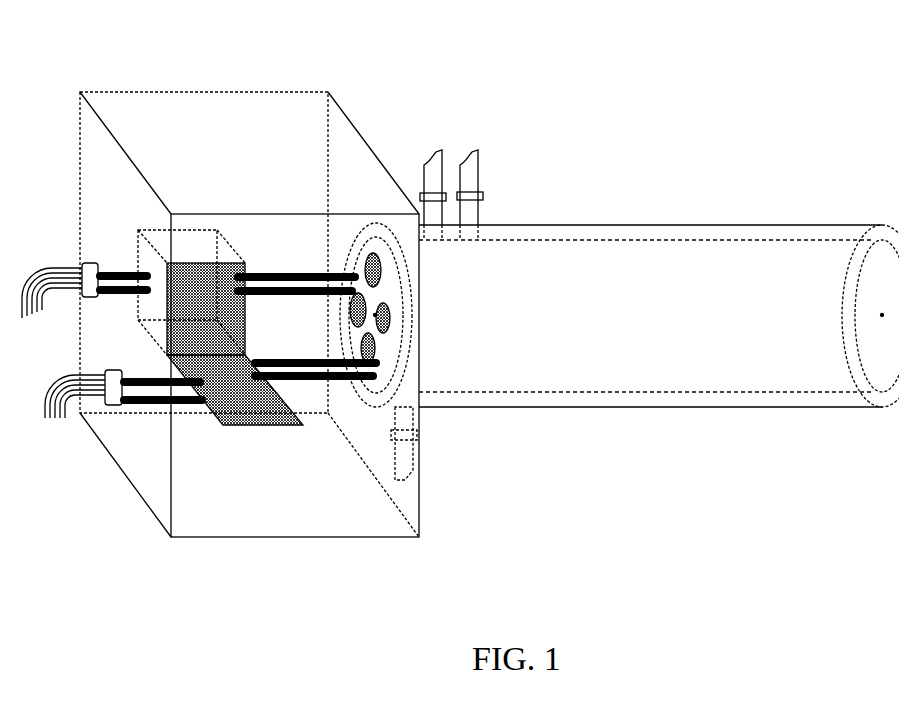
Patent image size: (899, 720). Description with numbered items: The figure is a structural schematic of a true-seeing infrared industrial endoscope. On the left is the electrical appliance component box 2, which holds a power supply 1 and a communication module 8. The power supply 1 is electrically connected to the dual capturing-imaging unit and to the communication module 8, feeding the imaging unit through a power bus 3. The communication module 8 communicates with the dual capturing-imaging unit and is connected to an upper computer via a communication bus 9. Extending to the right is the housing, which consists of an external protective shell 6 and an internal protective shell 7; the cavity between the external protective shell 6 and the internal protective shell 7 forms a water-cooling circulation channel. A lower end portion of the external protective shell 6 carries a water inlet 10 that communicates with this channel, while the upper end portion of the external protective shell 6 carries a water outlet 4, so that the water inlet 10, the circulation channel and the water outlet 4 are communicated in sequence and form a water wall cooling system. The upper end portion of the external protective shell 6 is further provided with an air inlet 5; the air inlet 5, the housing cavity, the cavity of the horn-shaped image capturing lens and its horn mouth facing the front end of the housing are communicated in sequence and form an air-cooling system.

The power supply 1 is at (200, 243).
The electrical appliance component box 2 is at (275, 155).
The power bus 3 is at (320, 390).
The water outlet 4 is at (433, 150).
The air inlet 5 is at (472, 150).
The external protective shell 6 is at (655, 225).
The internal protective shell 7 is at (882, 245).
The communication module 8 is at (235, 430).
The communication bus 9 is at (320, 415).
The water inlet 10 is at (409, 480).